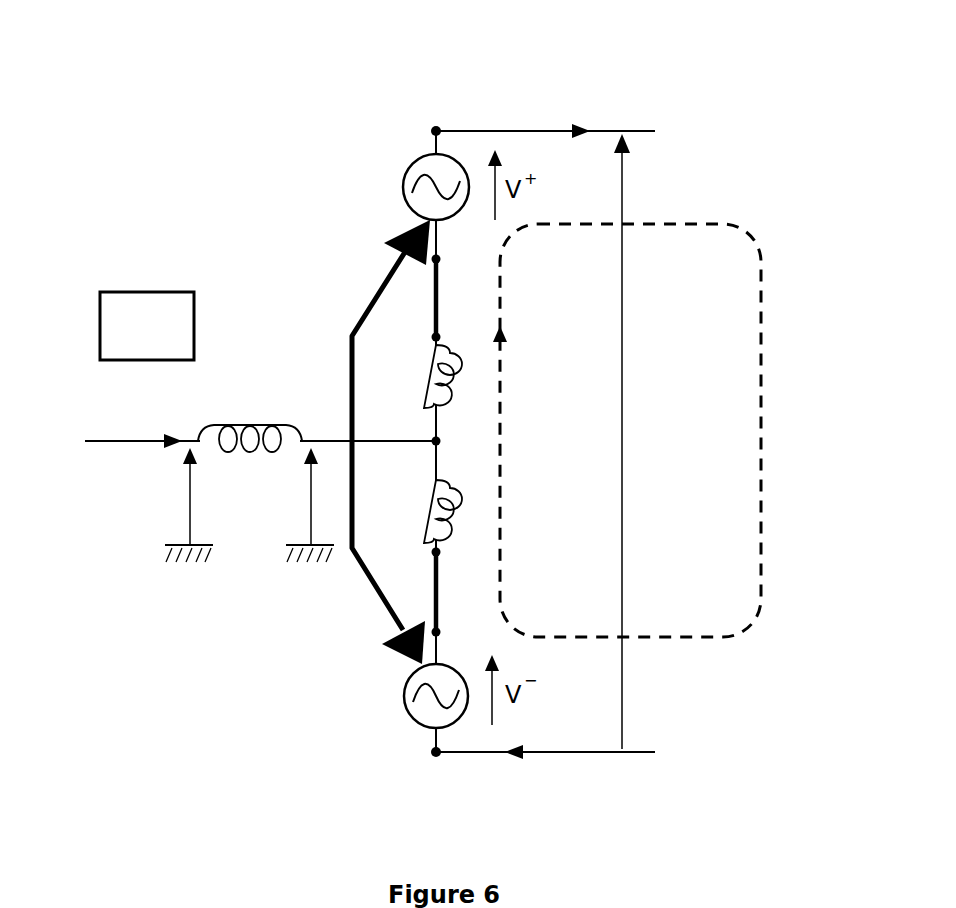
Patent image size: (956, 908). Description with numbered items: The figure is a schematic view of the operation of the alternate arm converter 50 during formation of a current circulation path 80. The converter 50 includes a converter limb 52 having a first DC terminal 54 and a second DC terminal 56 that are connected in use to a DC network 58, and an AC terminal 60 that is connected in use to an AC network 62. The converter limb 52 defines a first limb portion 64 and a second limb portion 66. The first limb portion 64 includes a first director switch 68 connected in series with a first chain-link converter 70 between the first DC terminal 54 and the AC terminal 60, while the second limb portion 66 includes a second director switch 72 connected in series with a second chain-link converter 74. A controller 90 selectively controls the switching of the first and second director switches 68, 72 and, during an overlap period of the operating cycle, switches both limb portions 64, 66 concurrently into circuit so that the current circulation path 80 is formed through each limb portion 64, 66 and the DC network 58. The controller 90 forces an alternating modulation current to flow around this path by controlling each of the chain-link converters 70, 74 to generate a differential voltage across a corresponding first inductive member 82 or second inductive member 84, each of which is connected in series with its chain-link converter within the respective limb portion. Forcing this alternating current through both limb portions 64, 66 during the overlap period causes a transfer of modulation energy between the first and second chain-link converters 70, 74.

The alternate arm converter 50 is at (207, 143).
The converter limb 52 is at (442, 97).
The first DC terminal 54 is at (432, 130).
The second DC terminal 56 is at (436, 757).
The DC network 58 is at (645, 687).
The AC terminal 60 is at (432, 438).
The AC network 62 is at (85, 441).
The first limb portion 64 is at (126, 290).
The second limb portion 66 is at (245, 615).
The first director switch 68 is at (430, 296).
The first chain-link converter 70 is at (403, 172).
The second director switch 72 is at (434, 592).
The second chain-link converter 74 is at (402, 705).
The current circulation path 80 is at (728, 226).
The first inductive member 82 is at (455, 380).
The second inductive member 84 is at (455, 520).
The controller 90 is at (100, 318).